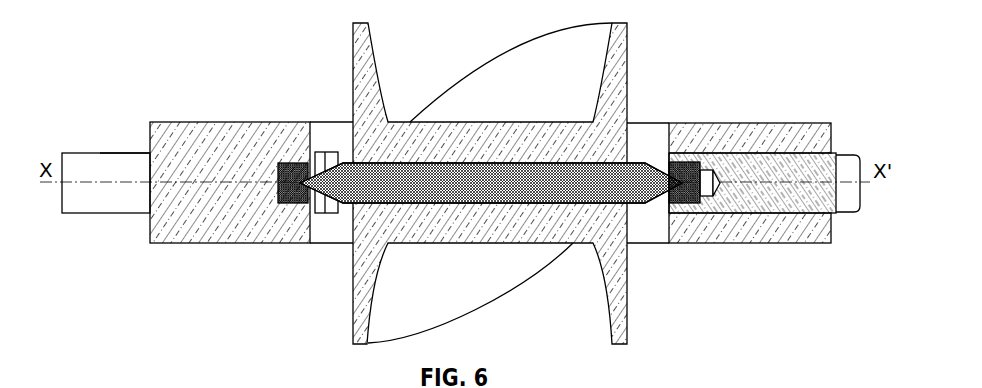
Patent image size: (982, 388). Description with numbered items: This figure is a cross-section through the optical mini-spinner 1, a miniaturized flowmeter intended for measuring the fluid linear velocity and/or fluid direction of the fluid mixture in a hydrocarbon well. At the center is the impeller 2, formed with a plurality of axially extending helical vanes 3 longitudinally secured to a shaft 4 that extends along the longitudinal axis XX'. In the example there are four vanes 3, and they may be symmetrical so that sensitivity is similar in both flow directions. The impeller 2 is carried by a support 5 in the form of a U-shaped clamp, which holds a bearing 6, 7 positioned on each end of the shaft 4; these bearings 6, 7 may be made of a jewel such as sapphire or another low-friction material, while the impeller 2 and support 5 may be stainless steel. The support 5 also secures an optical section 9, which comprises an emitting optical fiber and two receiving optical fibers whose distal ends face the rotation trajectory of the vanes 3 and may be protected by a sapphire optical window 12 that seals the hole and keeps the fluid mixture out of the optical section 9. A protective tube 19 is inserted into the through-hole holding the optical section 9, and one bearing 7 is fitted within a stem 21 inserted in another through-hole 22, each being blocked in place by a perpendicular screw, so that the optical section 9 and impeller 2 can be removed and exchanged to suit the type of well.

The optical mini-spinner 1 is at (215, 297).
The impeller 2 is at (505, 309).
The vane 3 is at (613, 60).
The shaft 4 is at (633, 195).
The support 5 is at (743, 110).
The bearing 6 is at (296, 203).
The bearing 7 is at (678, 215).
The optical section 9 is at (117, 224).
The optical window 12 is at (332, 152).
The protective tube 19 is at (130, 152).
The stem 21 is at (848, 213).
The through-hole 22 is at (748, 215).